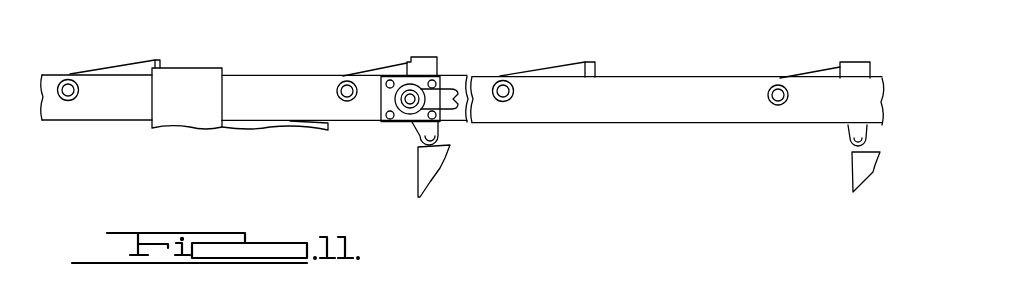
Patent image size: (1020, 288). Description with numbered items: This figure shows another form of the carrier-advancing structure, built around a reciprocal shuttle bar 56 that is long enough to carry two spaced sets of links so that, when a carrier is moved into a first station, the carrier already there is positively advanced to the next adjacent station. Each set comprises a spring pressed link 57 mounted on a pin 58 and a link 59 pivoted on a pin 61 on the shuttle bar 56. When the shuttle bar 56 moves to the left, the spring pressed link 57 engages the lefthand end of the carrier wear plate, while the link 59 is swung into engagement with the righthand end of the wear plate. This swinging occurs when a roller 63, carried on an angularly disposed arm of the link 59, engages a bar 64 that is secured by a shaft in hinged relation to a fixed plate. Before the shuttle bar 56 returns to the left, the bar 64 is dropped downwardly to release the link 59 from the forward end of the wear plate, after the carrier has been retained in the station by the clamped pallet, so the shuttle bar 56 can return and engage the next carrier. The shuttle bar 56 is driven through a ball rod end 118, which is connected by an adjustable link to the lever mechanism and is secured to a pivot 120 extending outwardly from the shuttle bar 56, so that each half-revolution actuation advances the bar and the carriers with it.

The reciprocal shuttle bar 56 is at (637, 115).
The spring pressed link 57 is at (157, 60).
The pin 58 is at (70, 82).
The link 59 is at (425, 57).
The pin 61 is at (349, 84).
The roller 63 is at (438, 138).
The bar 64 is at (433, 162).
The ball rod end 118 is at (443, 97).
The pivot 120 is at (407, 100).